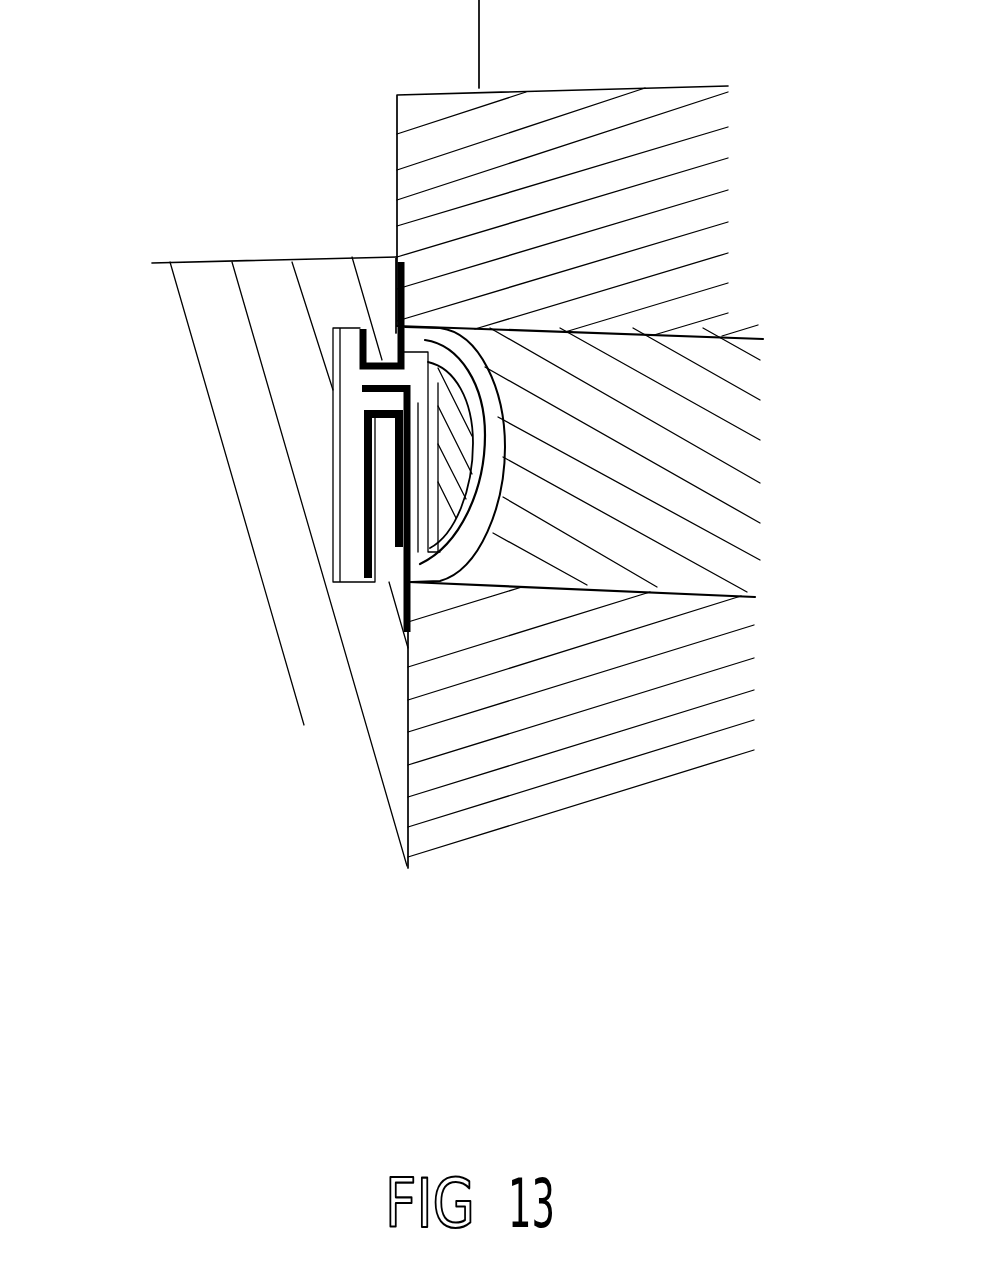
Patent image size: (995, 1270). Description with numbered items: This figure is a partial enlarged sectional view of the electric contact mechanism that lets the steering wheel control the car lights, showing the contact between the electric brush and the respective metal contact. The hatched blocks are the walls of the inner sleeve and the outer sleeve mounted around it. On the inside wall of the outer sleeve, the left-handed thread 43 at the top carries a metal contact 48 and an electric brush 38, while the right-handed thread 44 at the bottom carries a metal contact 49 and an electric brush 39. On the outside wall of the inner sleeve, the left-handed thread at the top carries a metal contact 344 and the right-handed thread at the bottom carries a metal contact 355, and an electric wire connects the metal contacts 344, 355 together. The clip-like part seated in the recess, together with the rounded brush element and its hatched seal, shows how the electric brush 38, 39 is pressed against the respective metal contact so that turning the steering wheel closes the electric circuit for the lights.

The metal contact 48 is at (346, 261).
The metal contact 49 is at (400, 256).
The right-handed thread 44 is at (237, 480).
The left-handed thread 43 is at (380, 395).
The electric brush 38 is at (282, 454).
The electric brush 39 is at (448, 485).
The metal contact 355 is at (401, 516).
The metal contact 344 is at (518, 561).